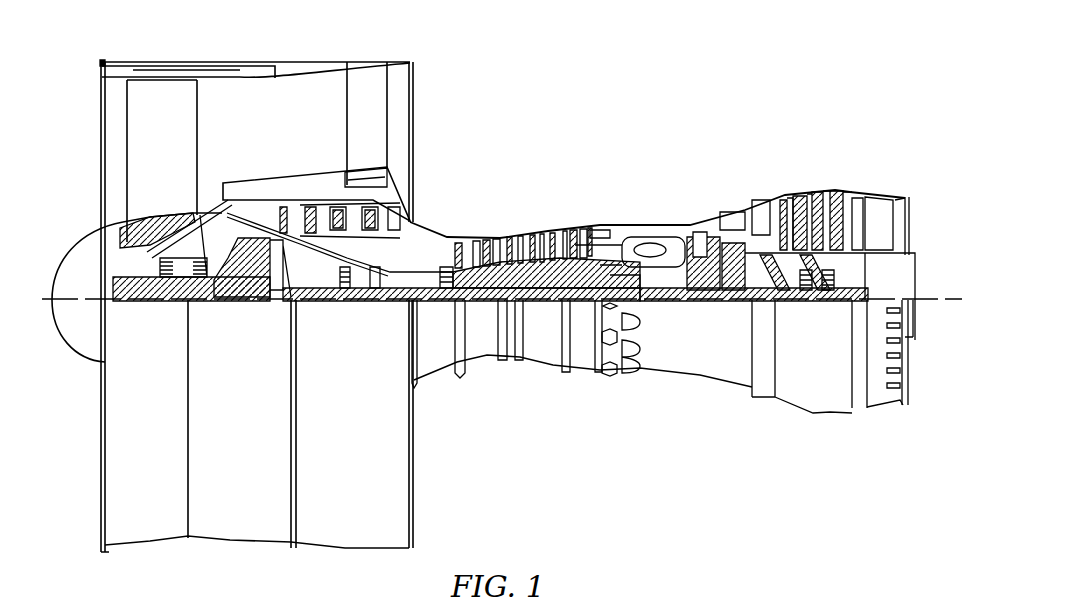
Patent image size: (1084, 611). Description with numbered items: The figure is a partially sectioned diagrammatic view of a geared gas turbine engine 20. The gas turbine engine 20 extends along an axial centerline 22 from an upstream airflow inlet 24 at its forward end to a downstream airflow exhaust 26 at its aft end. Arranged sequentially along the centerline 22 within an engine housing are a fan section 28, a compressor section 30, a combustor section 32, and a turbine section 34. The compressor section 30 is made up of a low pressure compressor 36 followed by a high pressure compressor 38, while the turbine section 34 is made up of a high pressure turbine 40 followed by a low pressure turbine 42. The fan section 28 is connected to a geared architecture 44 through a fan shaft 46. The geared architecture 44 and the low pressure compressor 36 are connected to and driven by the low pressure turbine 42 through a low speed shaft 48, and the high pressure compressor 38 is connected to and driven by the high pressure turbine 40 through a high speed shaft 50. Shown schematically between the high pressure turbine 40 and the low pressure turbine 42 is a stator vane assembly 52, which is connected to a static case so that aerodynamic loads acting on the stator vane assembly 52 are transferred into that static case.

The gas turbine engine 20 is at (655, 96).
The axial centerline 22 is at (952, 302).
The upstream airflow inlet 24 is at (86, 146).
The downstream airflow exhaust 26 is at (915, 214).
The fan section 28 is at (240, 45).
The compressor section 30 is at (608, 131).
The combustor section 32 is at (639, 246).
The turbine section 34 is at (872, 105).
The low pressure compressor 36 is at (383, 206).
The high pressure compressor 38 is at (529, 226).
The high pressure turbine 40 is at (698, 217).
The low pressure turbine 42 is at (820, 186).
The geared architecture 44 is at (258, 303).
The fan shaft 46 is at (150, 297).
The low speed shaft 48 is at (700, 301).
The high speed shaft 50 is at (548, 276).
The stator vane assembly 52 is at (728, 237).